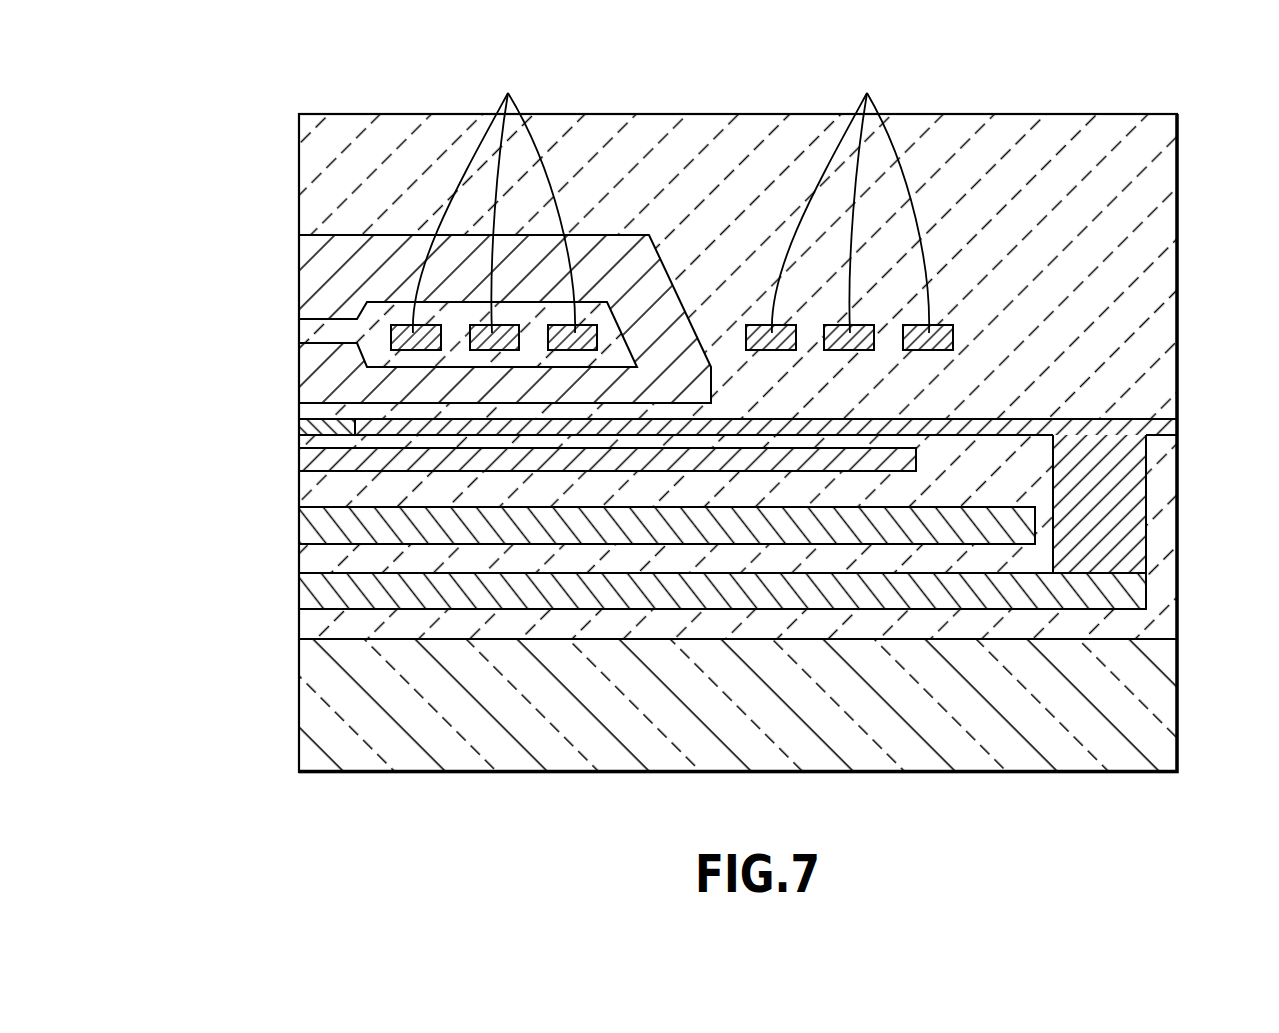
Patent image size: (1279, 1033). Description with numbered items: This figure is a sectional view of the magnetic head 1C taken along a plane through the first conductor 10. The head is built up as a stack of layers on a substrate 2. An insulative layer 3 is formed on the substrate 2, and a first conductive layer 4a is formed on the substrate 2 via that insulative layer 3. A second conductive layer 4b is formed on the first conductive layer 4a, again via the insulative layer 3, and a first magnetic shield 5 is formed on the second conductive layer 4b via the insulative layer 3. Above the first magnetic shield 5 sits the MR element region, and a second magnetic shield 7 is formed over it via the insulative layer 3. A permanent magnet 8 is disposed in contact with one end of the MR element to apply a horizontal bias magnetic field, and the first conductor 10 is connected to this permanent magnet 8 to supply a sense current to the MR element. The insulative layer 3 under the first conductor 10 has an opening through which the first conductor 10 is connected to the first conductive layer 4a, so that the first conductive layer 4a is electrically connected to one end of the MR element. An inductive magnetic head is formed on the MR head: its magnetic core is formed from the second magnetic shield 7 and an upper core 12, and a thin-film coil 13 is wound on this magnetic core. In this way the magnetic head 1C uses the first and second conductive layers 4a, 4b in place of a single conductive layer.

The magnetic head 1C is at (1027, 108).
The substrate 2 is at (1152, 722).
The insulative layer 3 is at (318, 332).
The first conductive layer 4a is at (315, 598).
The second conductive layer 4b is at (315, 525).
The first magnetic shield 5 is at (312, 460).
The second magnetic shield 7 is at (317, 388).
The permanent magnet 8 is at (312, 427).
The first conductor 10 is at (1123, 428).
The upper core 12 is at (317, 246).
The thin-film coil 13 is at (672, 202).